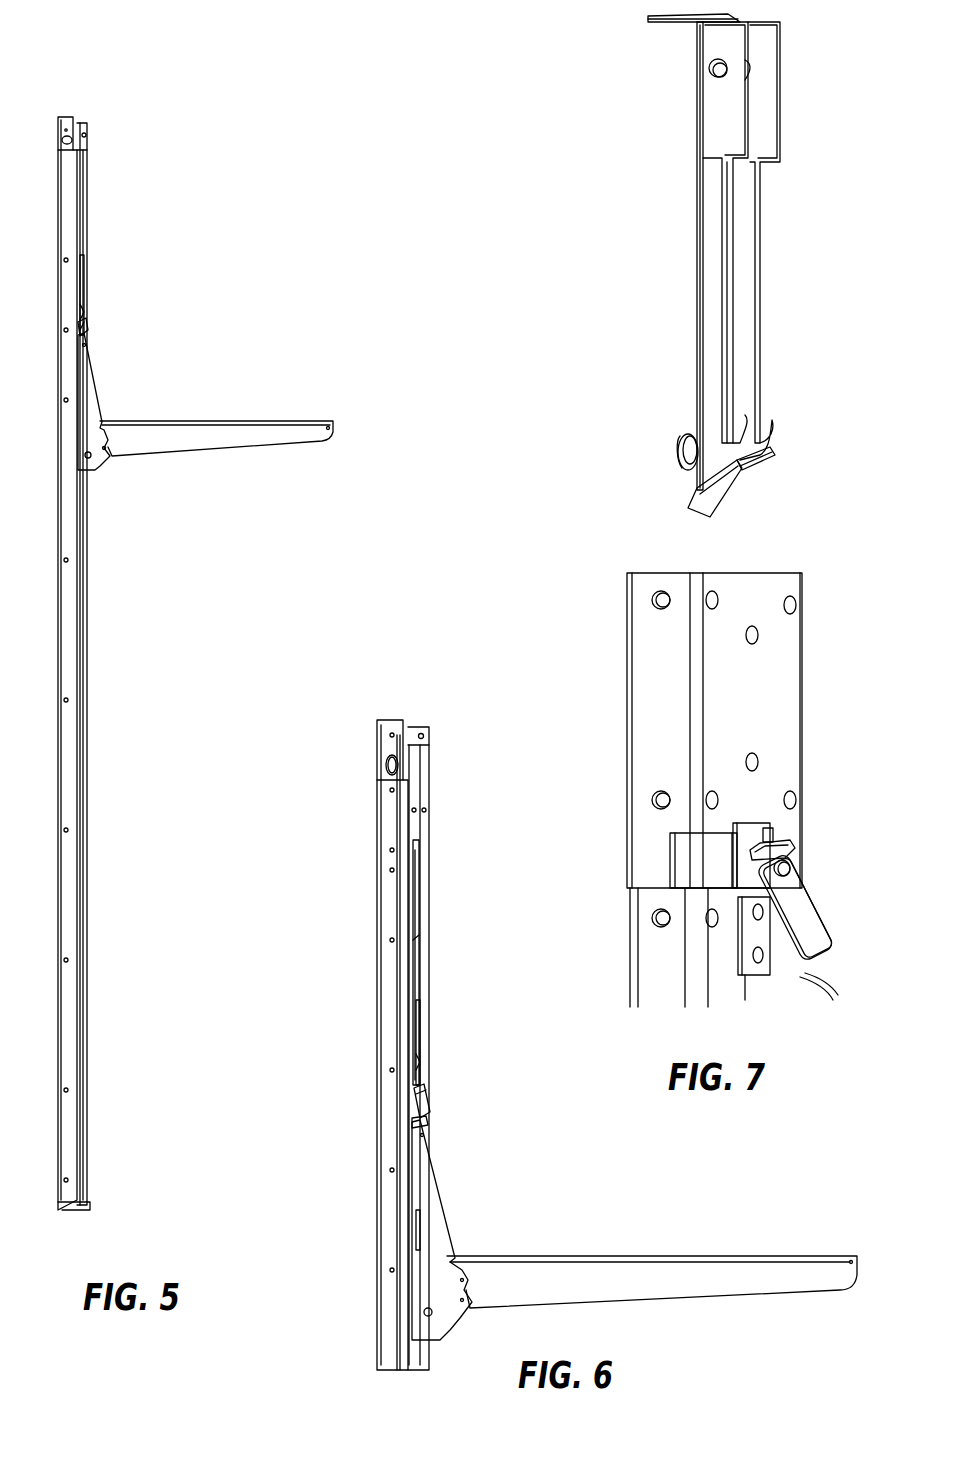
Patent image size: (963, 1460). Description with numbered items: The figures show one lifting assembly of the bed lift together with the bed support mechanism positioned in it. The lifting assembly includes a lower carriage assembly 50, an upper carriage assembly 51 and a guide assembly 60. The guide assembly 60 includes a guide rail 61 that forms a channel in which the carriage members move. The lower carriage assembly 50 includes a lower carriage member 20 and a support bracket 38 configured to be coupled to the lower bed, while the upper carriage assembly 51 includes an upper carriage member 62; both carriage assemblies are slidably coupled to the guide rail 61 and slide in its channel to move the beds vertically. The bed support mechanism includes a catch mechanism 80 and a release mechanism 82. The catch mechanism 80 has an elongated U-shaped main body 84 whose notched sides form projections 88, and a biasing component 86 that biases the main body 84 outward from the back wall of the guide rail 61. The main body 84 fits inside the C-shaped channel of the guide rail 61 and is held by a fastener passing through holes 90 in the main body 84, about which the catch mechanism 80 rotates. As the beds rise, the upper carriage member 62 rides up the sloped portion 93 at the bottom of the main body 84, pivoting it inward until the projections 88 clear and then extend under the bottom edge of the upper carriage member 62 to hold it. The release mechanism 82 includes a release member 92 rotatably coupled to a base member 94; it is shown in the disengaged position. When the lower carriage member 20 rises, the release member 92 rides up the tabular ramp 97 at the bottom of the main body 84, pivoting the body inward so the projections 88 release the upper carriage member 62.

In FIG. 7, the carriage member 20 is at (648, 998).
In FIG. 5, the support bracket 38 is at (95, 388).
In FIG. 6, the support bracket 38 is at (440, 1245).
In FIG. 7, the support bracket 38 is at (815, 968).
In FIG. 5, the lower carriage assembly 50 is at (102, 355).
In FIG. 6, the lower carriage assembly 50 is at (460, 1182).
In FIG. 5, the upper carriage assembly 51 is at (86, 306).
In FIG. 6, the upper carriage assembly 51 is at (420, 1043).
In FIG. 5, the guide assembly 60 is at (47, 797).
In FIG. 6, the guide assembly 60 is at (360, 1132).
In FIG. 5, the guide rail 61 is at (88, 612).
In FIG. 6, the guide rail 61 is at (383, 1005).
In FIG. 7, the upper carriage member 62 is at (657, 655).
In FIG. 6, the catch mechanism 80 is at (418, 893).
In FIG. 7, the catch mechanism 80 is at (672, 152).
In FIG. 6, the release mechanism 82 is at (432, 1101).
In FIG. 7, the release mechanism 82 is at (812, 855).
In FIG. 7, the main body 84 is at (707, 195).
In FIG. 7, the biasing component 86 is at (675, 460).
In FIG. 7, the projections 88 is at (748, 450).
In FIG. 7, the holes 90 is at (716, 70).
In FIG. 7, the release member 92 is at (800, 892).
In FIG. 7, the sloped portion 93 is at (755, 480).
In FIG. 7, the base member 94 is at (757, 930).
In FIG. 7, the tabular ramp 97 is at (705, 510).